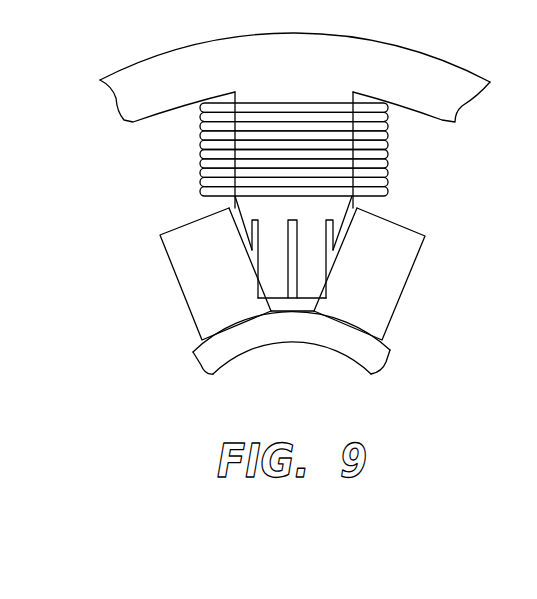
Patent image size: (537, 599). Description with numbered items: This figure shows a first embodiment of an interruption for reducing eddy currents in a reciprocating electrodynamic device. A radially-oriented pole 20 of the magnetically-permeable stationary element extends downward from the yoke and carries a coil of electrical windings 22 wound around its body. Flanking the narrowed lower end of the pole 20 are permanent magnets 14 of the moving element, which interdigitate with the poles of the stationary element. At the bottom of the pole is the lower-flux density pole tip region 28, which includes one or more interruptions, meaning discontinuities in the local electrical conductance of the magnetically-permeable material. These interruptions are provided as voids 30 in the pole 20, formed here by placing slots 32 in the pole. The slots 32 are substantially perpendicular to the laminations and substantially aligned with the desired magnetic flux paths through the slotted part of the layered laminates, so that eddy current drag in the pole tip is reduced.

The permanent magnets 14 is at (190, 285).
The pole 20 is at (345, 205).
The coil of electrical windings 22 is at (386, 155).
The lower-flux density pole tip region 28 is at (282, 295).
The voids 30 is at (306, 314).
The slots 32 is at (253, 230).